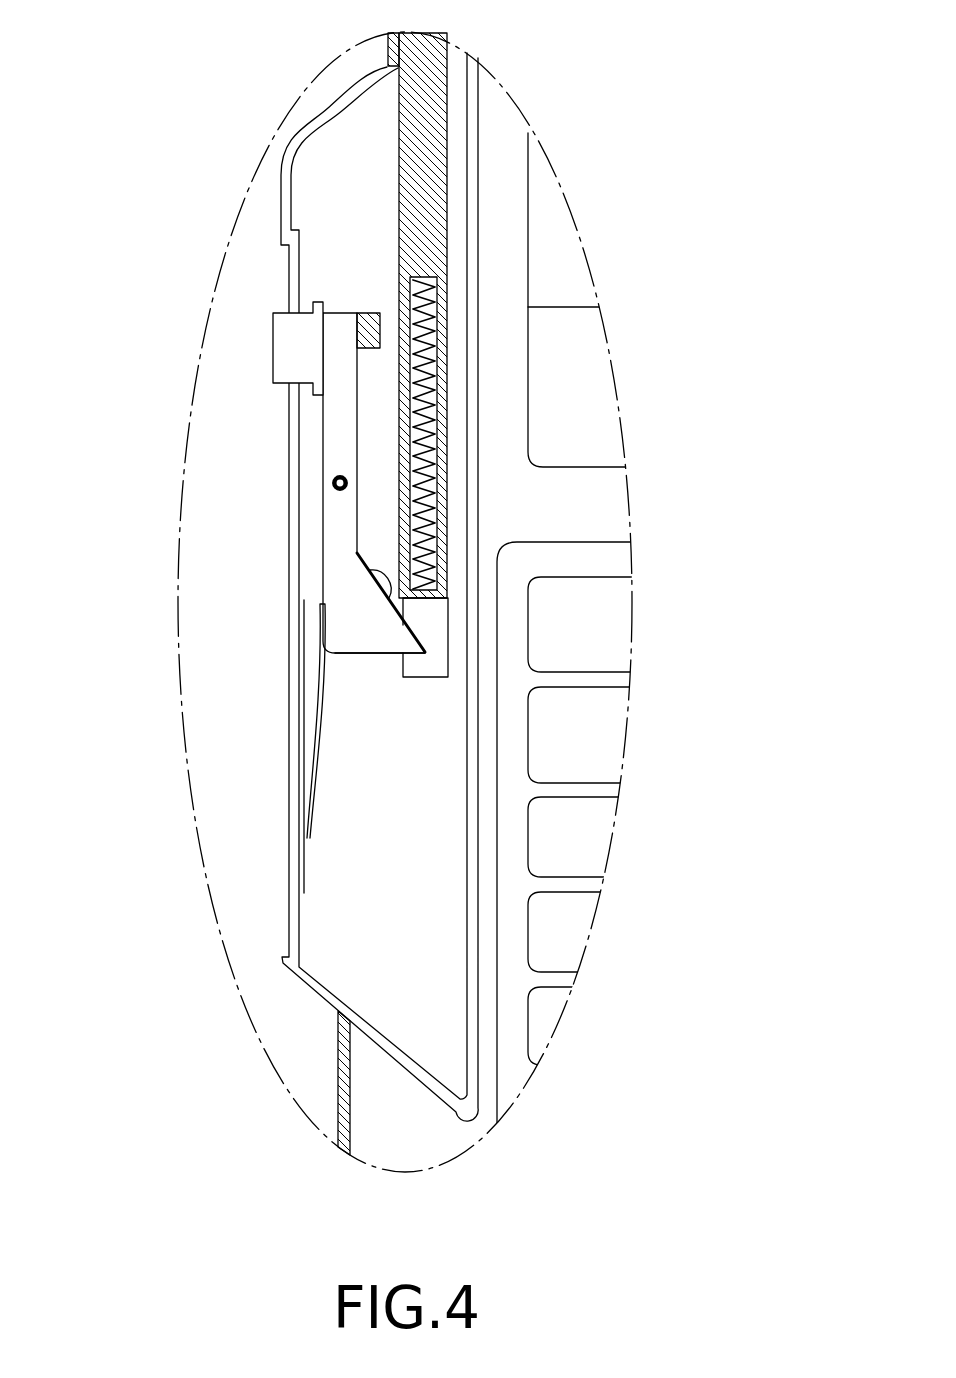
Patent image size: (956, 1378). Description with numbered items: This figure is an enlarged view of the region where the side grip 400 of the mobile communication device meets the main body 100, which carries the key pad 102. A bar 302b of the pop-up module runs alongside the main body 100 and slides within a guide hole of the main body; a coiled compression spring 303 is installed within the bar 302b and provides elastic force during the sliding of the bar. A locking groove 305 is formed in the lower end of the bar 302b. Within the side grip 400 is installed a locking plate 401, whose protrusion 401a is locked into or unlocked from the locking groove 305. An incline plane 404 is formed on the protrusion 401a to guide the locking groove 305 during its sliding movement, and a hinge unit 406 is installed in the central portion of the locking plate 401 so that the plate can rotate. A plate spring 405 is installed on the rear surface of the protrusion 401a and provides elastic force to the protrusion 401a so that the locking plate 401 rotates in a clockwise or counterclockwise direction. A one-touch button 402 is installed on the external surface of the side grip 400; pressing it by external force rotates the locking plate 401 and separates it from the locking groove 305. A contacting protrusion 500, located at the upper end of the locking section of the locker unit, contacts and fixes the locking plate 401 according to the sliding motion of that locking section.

The side grip 400 is at (272, 150).
The bar 302b is at (432, 42).
The coiled compression spring 303 is at (440, 350).
The contacting protrusion 500 is at (366, 313).
The one-touch button 402 is at (282, 353).
The hinge unit 406 is at (332, 483).
The locking plate 401 is at (337, 522).
The incline plane 404 is at (365, 572).
The protrusion 401a is at (340, 630).
The plate spring 405 is at (320, 735).
The locking groove 305 is at (410, 633).
The main body 100 is at (615, 512).
The key pad 102 is at (592, 745).